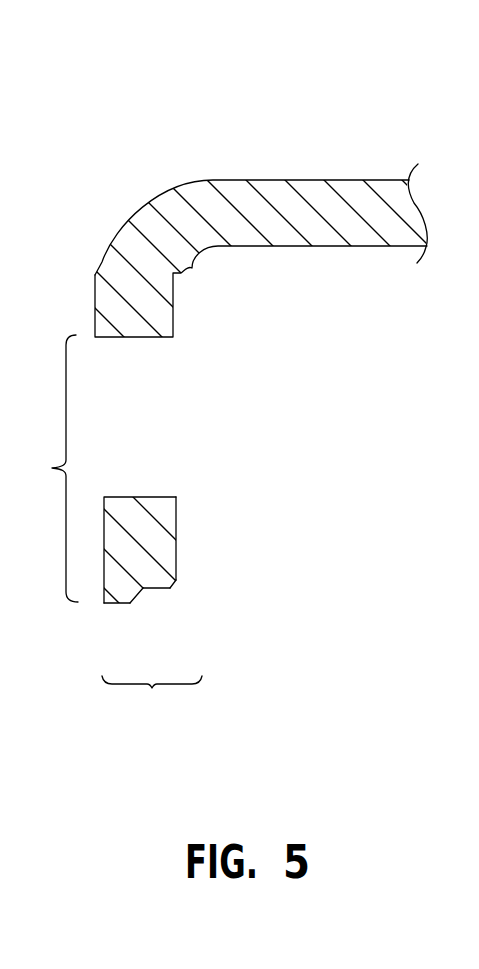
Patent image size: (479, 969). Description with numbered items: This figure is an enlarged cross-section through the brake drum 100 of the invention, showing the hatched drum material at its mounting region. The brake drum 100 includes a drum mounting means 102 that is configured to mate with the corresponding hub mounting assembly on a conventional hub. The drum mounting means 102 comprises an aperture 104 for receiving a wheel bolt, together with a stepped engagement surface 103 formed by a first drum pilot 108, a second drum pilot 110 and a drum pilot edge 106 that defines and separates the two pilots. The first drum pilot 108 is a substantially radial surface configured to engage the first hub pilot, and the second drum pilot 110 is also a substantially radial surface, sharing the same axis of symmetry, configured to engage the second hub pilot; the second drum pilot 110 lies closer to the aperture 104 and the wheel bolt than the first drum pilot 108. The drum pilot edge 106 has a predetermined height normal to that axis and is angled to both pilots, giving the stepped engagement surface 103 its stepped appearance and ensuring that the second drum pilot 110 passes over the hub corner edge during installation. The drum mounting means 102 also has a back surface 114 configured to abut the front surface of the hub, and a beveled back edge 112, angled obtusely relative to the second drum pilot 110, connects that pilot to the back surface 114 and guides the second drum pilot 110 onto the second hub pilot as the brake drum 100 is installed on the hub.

The brake drum 100 is at (348, 145).
The drum mounting means 102 is at (40, 468).
The stepped engagement surface 103 is at (152, 699).
The aperture 104 is at (175, 411).
The drum pilot edge 106 is at (137, 602).
The first drum pilot 108 is at (112, 603).
The second drum pilot 110 is at (157, 588).
The beveled back edge 112 is at (172, 579).
The back surface 114 is at (176, 543).